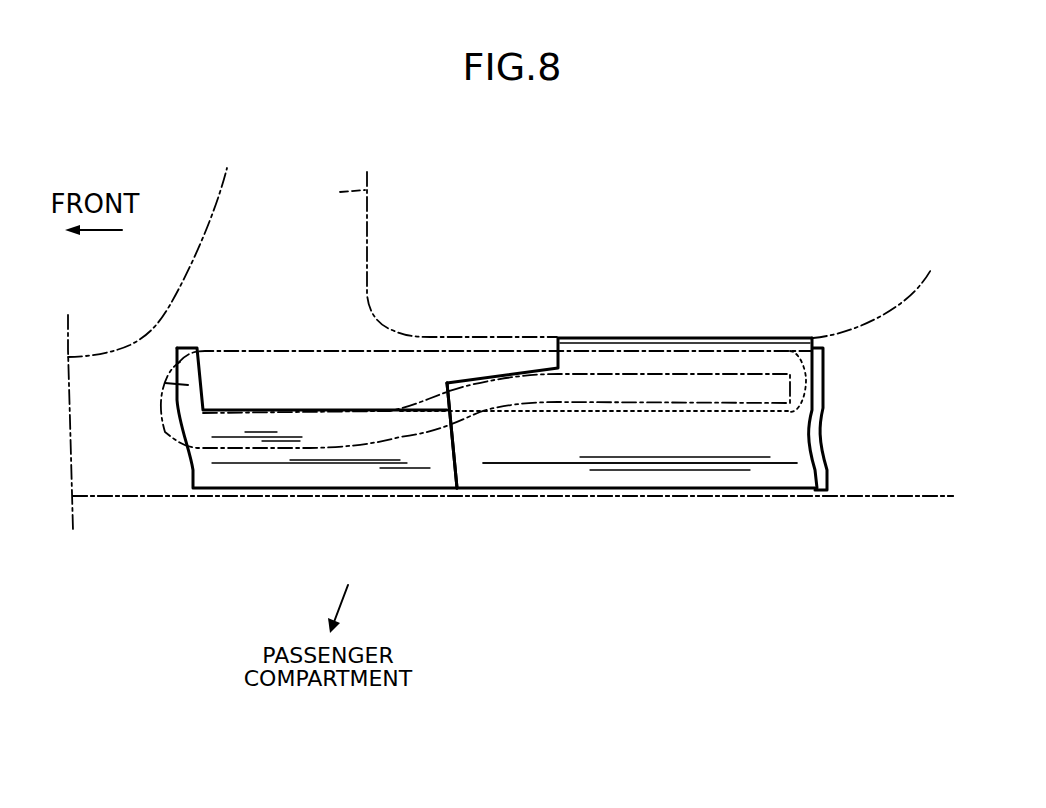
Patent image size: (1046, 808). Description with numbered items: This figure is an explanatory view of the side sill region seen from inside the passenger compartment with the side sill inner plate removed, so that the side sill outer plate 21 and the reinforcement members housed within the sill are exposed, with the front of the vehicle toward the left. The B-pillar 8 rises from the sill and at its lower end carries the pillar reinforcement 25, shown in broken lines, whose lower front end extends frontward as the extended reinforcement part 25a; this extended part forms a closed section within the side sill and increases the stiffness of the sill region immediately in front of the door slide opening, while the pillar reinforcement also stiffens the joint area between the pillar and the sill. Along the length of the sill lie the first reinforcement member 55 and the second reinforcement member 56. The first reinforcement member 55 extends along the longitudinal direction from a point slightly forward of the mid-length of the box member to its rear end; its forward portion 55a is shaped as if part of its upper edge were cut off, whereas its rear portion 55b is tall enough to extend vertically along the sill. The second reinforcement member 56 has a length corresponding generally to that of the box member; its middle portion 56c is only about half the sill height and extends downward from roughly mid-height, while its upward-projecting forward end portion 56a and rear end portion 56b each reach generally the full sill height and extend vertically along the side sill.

The B-pillar 8 is at (369, 190).
The side sill outer plate 21 is at (900, 485).
The pillar reinforcement 25 is at (523, 358).
The extended reinforcement part 25a is at (367, 358).
The first reinforcement member 55 is at (639, 471).
The forward portion 55a is at (502, 448).
The rear portion 55b is at (755, 472).
The second reinforcement member 56 is at (223, 476).
The forward end portion 56a is at (165, 383).
The rear end portion 56b is at (823, 382).
The middle portion 56c is at (418, 462).